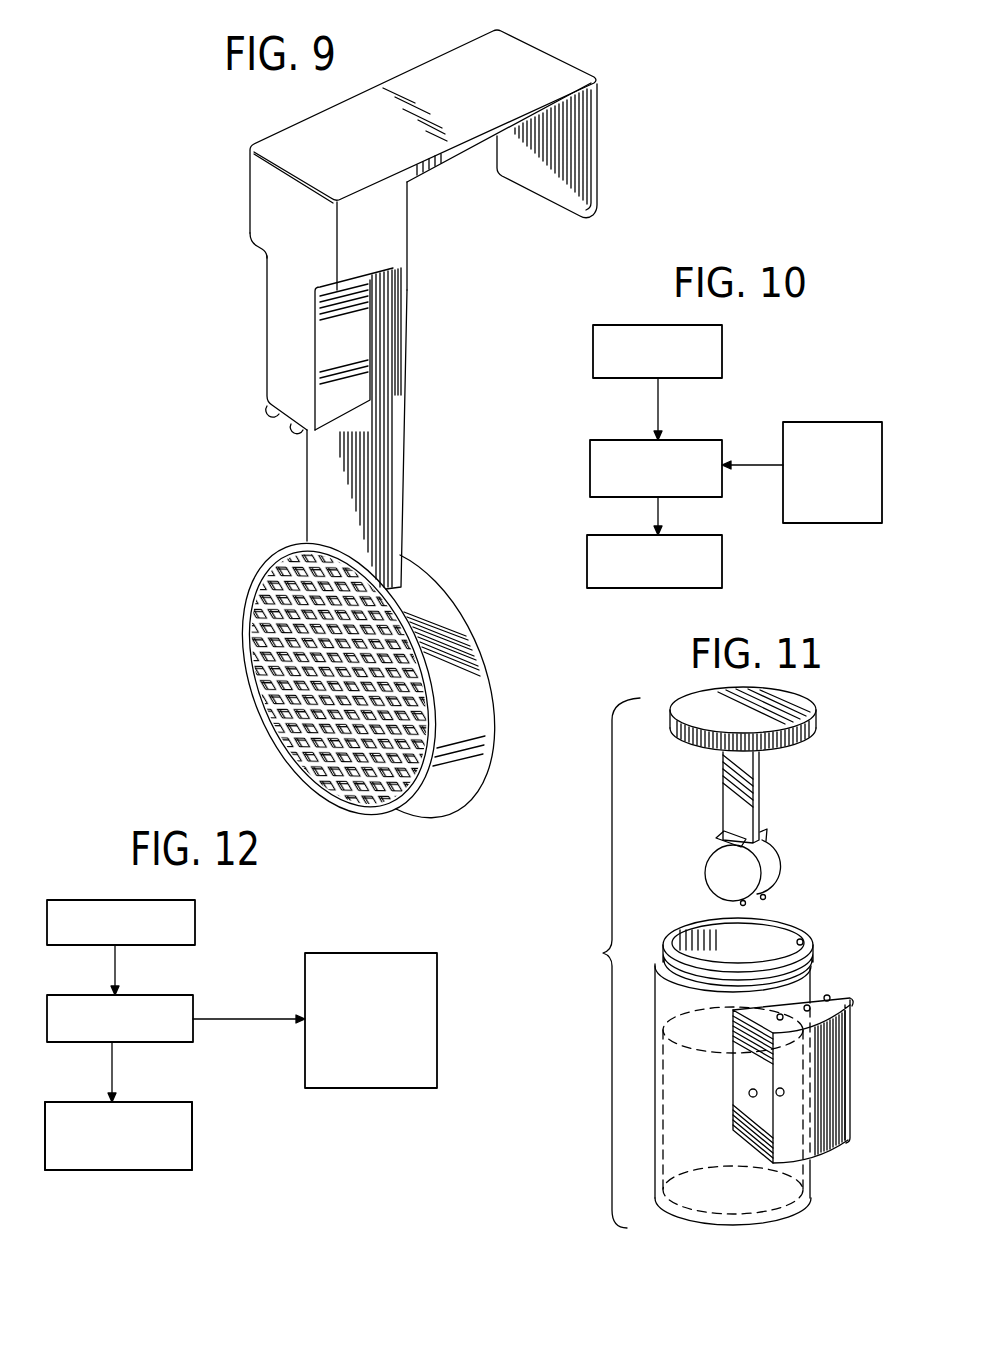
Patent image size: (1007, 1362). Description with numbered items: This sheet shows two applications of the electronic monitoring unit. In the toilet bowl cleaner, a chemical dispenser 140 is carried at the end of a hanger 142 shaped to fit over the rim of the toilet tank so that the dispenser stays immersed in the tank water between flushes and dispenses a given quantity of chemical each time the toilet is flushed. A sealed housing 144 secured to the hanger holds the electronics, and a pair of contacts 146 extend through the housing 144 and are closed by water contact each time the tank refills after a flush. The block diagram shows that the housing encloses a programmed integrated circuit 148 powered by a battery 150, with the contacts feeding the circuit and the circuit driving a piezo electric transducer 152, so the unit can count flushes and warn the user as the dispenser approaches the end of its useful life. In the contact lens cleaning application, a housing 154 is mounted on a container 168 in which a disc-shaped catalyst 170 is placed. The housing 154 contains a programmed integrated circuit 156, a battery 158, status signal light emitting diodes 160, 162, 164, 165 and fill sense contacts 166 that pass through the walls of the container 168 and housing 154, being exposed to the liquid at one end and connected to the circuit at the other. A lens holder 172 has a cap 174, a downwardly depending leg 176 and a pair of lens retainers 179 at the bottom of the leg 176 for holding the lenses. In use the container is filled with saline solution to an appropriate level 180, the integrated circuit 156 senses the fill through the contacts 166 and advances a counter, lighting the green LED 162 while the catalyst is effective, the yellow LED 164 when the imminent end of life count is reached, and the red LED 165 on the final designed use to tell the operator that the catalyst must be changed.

In FIG. 9, the chemical dispenser 140 is at (450, 593).
In FIG. 9, the hanger 142 is at (423, 77).
In FIG. 9, the sealed housing 144 is at (267, 313).
In FIG. 9, the contacts 146 is at (297, 428).
In FIG. 10, the contacts 146 is at (823, 422).
In FIG. 10, the programmed integrated circuit 148 is at (590, 453).
In FIG. 10, the battery 150 is at (593, 338).
In FIG. 10, the piezo electric transducer 152 is at (722, 560).
In FIG. 11, the housing 154 is at (833, 1070).
In FIG. 12, the programmed integrated circuit 156 is at (193, 1003).
In FIG. 12, the battery 158 is at (195, 918).
In FIG. 12, the status signal light emitting diodes 160 is at (192, 1130).
In FIG. 11, the LED 162 is at (778, 1013).
In FIG. 12, the LED 164 is at (118, 1136).
In FIG. 11, the LED 164 is at (810, 985).
In FIG. 11, the LED 165 is at (831, 995).
In FIG. 12, the fill sense contacts 166 is at (437, 1000).
In FIG. 11, the fill sense contacts 166 is at (777, 1098).
In FIG. 11, the container 168 is at (803, 940).
In FIG. 11, the catalyst 170 is at (683, 1203).
In FIG. 11, the lens holder 172 is at (759, 782).
In FIG. 11, the cap 174 is at (673, 732).
In FIG. 11, the leg 176 is at (757, 804).
In FIG. 11, the lens retainers 179 is at (710, 868).
In FIG. 11, the level 180 is at (677, 1020).